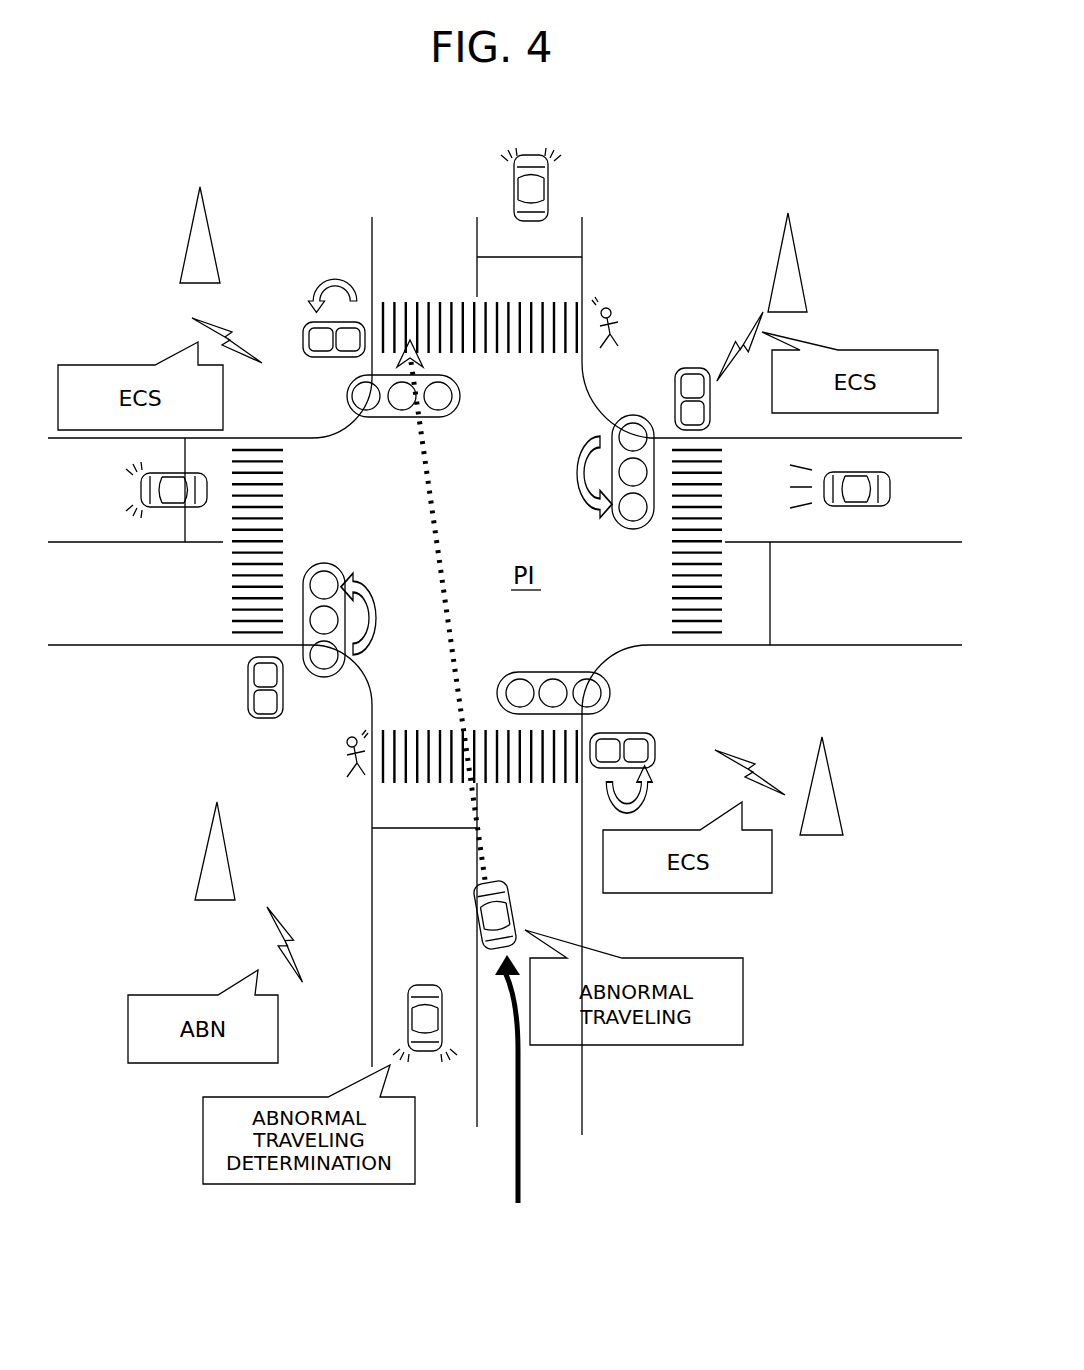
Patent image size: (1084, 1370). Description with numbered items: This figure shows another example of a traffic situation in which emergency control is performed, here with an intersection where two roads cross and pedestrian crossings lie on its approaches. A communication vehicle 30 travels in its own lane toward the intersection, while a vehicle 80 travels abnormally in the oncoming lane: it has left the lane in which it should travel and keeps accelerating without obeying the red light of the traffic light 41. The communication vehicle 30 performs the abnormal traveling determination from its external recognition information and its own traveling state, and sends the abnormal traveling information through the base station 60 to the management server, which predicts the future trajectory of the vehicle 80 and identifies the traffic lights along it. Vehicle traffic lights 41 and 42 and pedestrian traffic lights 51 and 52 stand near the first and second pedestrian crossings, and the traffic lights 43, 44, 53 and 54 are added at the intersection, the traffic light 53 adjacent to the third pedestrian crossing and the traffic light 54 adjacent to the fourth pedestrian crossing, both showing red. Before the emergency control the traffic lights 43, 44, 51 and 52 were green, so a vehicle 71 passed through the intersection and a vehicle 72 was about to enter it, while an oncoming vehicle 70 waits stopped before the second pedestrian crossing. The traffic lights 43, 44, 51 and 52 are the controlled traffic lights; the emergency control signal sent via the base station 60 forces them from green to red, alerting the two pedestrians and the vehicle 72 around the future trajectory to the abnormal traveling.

The communication vehicle 30 is at (408, 1022).
The traffic light 41 is at (609, 678).
The traffic light 42 is at (347, 394).
The traffic light 43 is at (318, 678).
The traffic light 44 is at (636, 416).
The traffic light 51 is at (657, 743).
The traffic light 52 is at (303, 329).
The traffic light 53 is at (249, 695).
The traffic light 54 is at (700, 370).
The base station 60 is at (198, 190).
The vehicle 70 is at (548, 190).
The vehicle 71 is at (848, 507).
The vehicle 72 is at (180, 505).
The vehicle 80 is at (503, 870).